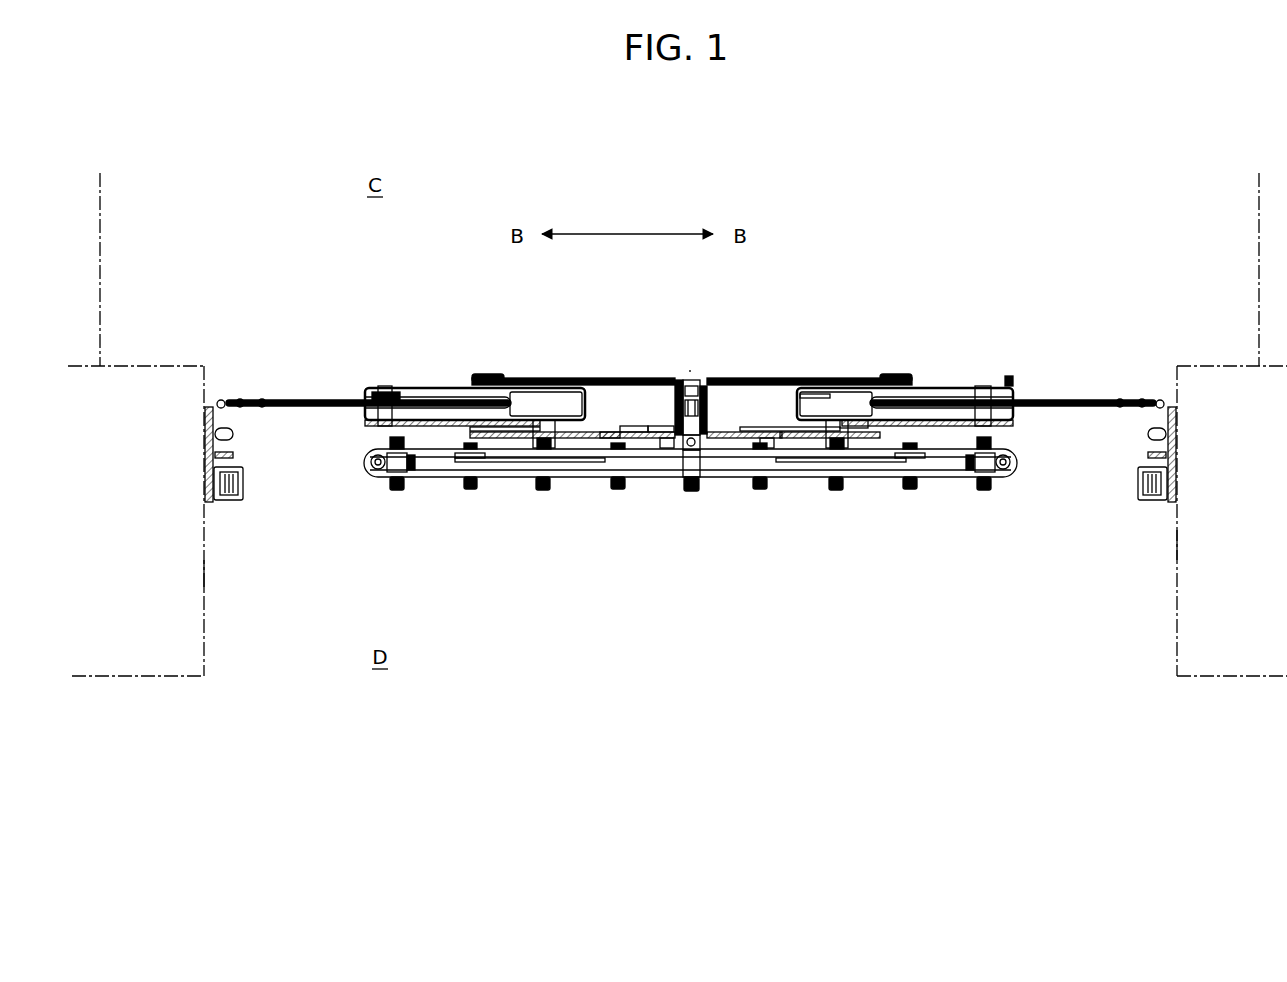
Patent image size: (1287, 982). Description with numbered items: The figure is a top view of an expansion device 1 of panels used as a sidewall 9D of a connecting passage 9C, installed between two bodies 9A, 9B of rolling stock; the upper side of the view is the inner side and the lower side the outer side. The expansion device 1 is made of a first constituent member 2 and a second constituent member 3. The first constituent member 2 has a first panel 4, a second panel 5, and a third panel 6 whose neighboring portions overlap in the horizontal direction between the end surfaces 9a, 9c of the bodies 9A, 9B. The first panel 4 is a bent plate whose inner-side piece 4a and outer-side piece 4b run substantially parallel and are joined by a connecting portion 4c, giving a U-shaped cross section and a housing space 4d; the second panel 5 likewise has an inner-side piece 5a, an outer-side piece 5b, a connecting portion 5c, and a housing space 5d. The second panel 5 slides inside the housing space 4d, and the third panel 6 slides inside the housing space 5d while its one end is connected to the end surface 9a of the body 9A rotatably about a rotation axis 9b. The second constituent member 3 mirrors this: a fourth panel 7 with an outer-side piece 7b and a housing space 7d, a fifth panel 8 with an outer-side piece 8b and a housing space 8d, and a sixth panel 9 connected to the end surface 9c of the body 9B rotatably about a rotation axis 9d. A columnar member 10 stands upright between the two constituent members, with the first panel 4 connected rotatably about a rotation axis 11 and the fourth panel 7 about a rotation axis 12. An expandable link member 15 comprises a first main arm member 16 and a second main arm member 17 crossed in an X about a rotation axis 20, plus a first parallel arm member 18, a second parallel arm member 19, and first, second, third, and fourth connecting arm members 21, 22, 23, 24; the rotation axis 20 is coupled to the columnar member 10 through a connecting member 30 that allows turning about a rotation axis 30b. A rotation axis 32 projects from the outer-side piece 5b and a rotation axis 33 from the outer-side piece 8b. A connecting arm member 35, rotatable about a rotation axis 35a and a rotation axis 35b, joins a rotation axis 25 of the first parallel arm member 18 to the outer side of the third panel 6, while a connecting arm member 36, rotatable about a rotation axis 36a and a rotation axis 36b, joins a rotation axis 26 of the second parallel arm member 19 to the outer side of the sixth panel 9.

The expansion device 1 is at (1006, 375).
The first constituent member 2 is at (893, 375).
The second constituent member 3 is at (601, 375).
The first panel 4 is at (801, 376).
The inner-side piece 4a is at (757, 380).
The outer-side piece 4b is at (735, 436).
The connecting portion 4c is at (710, 405).
The housing space 4d is at (770, 432).
The second panel 5 is at (831, 392).
The inner-side piece 5a is at (944, 392).
The outer-side piece 5b is at (818, 438).
The connecting portion 5c is at (798, 398).
The housing space 5d is at (852, 420).
The third panel 6 is at (1067, 393).
The fourth panel 7 is at (652, 373).
The outer-side piece 7b is at (683, 436).
The housing space 7d is at (660, 432).
The fifth panel 8 is at (453, 378).
The outer-side piece 8b is at (572, 425).
The housing space 8d is at (532, 400).
The sixth panel 9 is at (289, 393).
The body 9A is at (1187, 597).
The body 9B is at (201, 596).
The connecting passage 9C is at (561, 183).
The sidewall 9D is at (411, 375).
The end surface 9a is at (1175, 545).
The rotation axis 9b is at (1162, 400).
The end surface 9c is at (205, 576).
The rotation axis 9d is at (223, 400).
The columnar member 10 is at (691, 380).
The rotation axis 11 is at (705, 400).
The rotation axis 12 is at (681, 380).
The link member 15 is at (951, 482).
The first main arm member 16 is at (612, 479).
The second main arm member 17 is at (744, 473).
The first parallel arm member 18 is at (889, 480).
The second parallel arm member 19 is at (487, 479).
The rotation axis 20 is at (691, 490).
The first connecting arm member 21 is at (793, 468).
The second connecting arm member 22 is at (935, 456).
The third connecting arm member 23 is at (516, 462).
The fourth connecting arm member 24 is at (475, 470).
The rotation axis 25 is at (990, 478).
The rotation axis 26 is at (398, 491).
The connecting member 30 is at (683, 478).
The rotation axis 30b is at (668, 425).
The rotation axis 32 is at (837, 491).
The rotation axis 33 is at (543, 491).
The connecting arm member 35 is at (1046, 412).
The rotation axis 35a is at (980, 395).
The rotation axis 35b is at (1006, 476).
The connecting arm member 36 is at (332, 407).
The rotation axis 36a is at (384, 395).
The rotation axis 36b is at (412, 472).